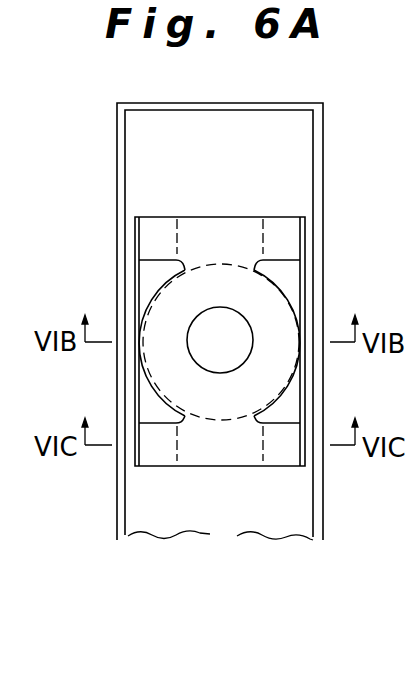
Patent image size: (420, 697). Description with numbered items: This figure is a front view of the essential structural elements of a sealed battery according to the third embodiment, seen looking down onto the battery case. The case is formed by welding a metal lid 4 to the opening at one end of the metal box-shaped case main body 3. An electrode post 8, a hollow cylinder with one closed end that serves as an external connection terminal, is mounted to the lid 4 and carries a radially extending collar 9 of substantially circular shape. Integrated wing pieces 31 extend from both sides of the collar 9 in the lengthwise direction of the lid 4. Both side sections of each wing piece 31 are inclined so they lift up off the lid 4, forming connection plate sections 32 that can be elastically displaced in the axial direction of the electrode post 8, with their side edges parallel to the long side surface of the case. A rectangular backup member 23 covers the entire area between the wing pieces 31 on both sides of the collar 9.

The case main body 3 is at (117, 178).
The lid 4 is at (198, 143).
The electrode post 8 is at (142, 383).
The collar 9 is at (273, 313).
The backup member 23 is at (292, 274).
The wing piece 31 is at (216, 237).
The connection plate section 32 is at (150, 237).